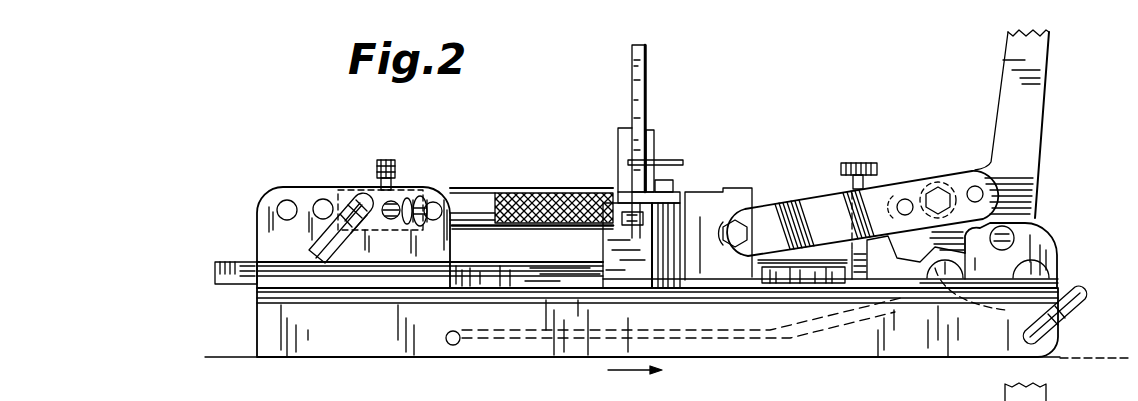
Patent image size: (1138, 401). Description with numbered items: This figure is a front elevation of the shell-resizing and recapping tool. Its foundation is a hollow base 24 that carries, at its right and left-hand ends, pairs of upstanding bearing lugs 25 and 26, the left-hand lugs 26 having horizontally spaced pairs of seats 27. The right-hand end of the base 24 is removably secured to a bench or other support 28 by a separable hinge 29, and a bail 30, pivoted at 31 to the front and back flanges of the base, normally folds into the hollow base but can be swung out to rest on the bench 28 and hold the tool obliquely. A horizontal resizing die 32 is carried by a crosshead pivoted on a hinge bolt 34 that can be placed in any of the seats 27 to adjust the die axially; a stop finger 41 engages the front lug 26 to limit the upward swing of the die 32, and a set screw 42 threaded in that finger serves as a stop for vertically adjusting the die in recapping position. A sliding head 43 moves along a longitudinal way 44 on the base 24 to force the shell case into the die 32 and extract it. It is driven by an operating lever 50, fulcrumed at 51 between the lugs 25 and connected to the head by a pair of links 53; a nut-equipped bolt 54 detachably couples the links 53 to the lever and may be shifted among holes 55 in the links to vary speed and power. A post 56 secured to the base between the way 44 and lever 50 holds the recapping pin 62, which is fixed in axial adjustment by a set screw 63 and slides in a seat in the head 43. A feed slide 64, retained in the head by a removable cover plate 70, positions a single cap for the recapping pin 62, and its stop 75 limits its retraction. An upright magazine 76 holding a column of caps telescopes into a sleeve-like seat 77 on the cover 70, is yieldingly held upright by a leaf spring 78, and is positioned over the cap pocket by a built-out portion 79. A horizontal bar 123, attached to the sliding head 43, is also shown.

The horizontal bar 123 is at (243, 280).
The hollow base 24 is at (583, 352).
The bearing lugs 25 is at (1062, 252).
The bearing lugs 26 is at (262, 233).
The seats 27 is at (382, 203).
The bench or other support 28 is at (1083, 352).
The separable hinge 29 is at (1065, 340).
The bail 30 is at (795, 356).
The pivot 31 is at (449, 344).
The resizing die 32 is at (527, 188).
The hinge bolt 34 is at (316, 238).
The stop finger 41 is at (396, 178).
The set screw 42 is at (396, 165).
The sliding head 43 is at (746, 186).
The longitudinal way 44 is at (820, 268).
The operating lever 50 is at (1010, 64).
The fulcrum 51 is at (1010, 232).
The links 53 is at (800, 206).
The nut-equipped bolt 54 is at (989, 269).
The holes 55 is at (970, 184).
The post 56 is at (876, 258).
The recapping pin 62 is at (765, 204).
The set screw 63 is at (860, 162).
The feed slide 64 is at (630, 232).
The cover plate 70 is at (674, 190).
The stop 75 is at (643, 222).
The magazine 76 is at (647, 90).
The sleeve-like seat 77 is at (656, 132).
The leaf spring 78 is at (681, 158).
The built-out portion 79 is at (632, 134).